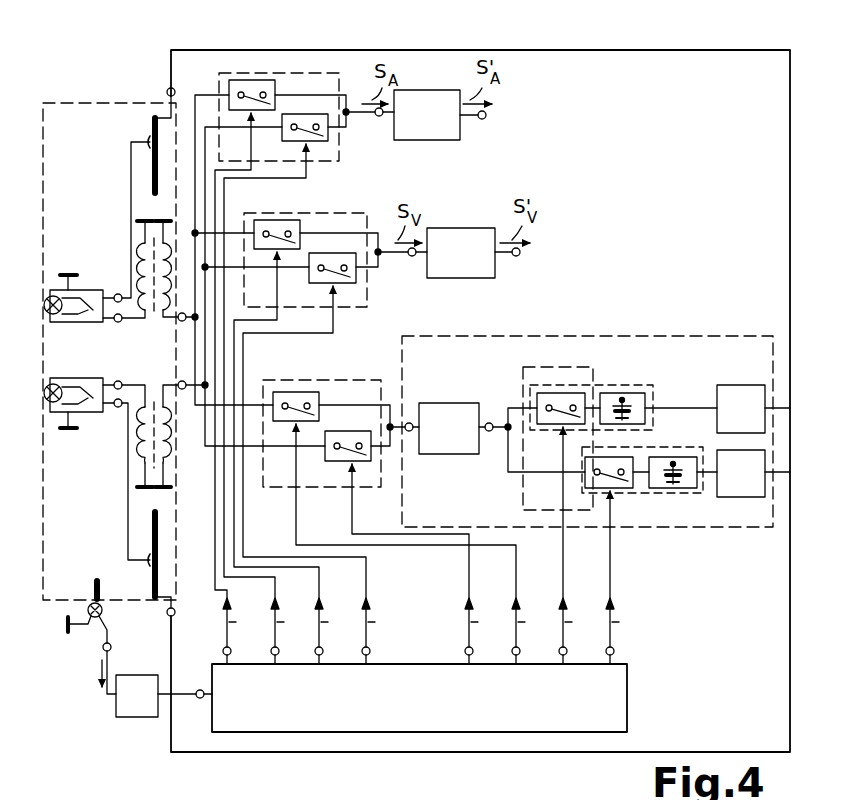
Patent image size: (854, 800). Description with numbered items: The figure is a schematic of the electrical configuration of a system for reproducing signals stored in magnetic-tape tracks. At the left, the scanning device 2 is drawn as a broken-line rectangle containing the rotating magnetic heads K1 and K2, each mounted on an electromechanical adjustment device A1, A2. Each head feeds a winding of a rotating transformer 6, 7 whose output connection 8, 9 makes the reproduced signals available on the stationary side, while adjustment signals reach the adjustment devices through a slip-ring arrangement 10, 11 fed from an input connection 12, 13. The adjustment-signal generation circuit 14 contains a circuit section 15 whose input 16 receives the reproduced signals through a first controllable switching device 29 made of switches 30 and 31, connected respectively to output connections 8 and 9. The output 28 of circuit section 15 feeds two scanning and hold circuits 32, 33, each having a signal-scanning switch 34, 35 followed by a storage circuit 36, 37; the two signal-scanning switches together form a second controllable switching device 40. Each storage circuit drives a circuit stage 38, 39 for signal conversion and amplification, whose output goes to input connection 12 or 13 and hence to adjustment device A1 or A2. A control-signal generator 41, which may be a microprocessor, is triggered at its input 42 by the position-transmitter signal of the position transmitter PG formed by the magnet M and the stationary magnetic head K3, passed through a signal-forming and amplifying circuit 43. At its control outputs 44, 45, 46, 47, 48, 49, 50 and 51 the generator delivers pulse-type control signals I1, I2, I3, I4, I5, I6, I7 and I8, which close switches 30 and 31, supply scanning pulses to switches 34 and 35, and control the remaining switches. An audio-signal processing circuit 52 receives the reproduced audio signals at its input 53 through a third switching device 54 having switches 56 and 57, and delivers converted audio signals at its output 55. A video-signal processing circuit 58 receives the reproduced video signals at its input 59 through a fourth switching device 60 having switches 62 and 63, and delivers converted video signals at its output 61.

The scanning device 2 is at (82, 100).
The rotating transformer 6 is at (151, 312).
The rotating transformer 7 is at (154, 393).
The output connection 8 is at (183, 312).
The output connection 9 is at (183, 390).
The slip-ring arrangement 10 is at (146, 142).
The slip-ring arrangement 11 is at (124, 558).
The input connection 12 is at (168, 89).
The input connection 13 is at (174, 616).
The adjustment-signal generation circuit 14 is at (652, 334).
The circuit section 15 is at (440, 408).
The input 16 is at (411, 432).
The output 28 is at (489, 432).
The first controllable switching device 29 is at (342, 378).
The switch 30 is at (284, 392).
The switch 31 is at (336, 448).
The scanning and hold circuit 32 is at (623, 400).
The scanning and hold circuit 33 is at (627, 490).
The signal-scanning switch 34 is at (548, 418).
The signal-scanning switch 35 is at (584, 478).
The storage circuit 36 is at (614, 396).
The storage circuit 37 is at (660, 488).
The circuit stage 38 is at (736, 396).
The circuit stage 39 is at (740, 494).
The second controllable switching device 40 is at (546, 366).
The control-signal generator 41 is at (627, 712).
The input 42 is at (200, 699).
The signal-forming and amplifying circuit 43 is at (130, 716).
The control output 44 is at (473, 653).
The control output 45 is at (520, 653).
The control output 46 is at (567, 653).
The control output 47 is at (614, 653).
The control output 48 is at (231, 653).
The control output 49 is at (279, 653).
The control output 50 is at (323, 653).
The control output 51 is at (370, 653).
The audio-signal processing circuit 52 is at (426, 138).
The input 53 is at (378, 117).
The third switching device 54 is at (298, 76).
The output terminal 55 is at (485, 118).
The switch 56 is at (253, 88).
The switch 57 is at (304, 120).
The video-signal processing circuit 58 is at (458, 278).
The input 59 is at (411, 257).
The fourth switching device 60 is at (326, 212).
The output 61 is at (518, 256).
The switch 62 is at (272, 226).
The switch 63 is at (324, 256).
The electromechanical adjustment device A1 is at (92, 294).
The electromechanical adjustment device A2 is at (90, 412).
The magnetic head K1 is at (52, 315).
The magnetic head K2 is at (60, 387).
The stationary magnetic head K3 is at (101, 612).
The magnet M is at (92, 590).
The pulse generator PG is at (99, 670).
The pulse-type control signal I1 is at (485, 623).
The pulse-type control signal I2 is at (532, 623).
The pulse-type control signal I3 is at (579, 623).
The pulse-type control signal I4 is at (626, 623).
The pulse-type control signal I5 is at (243, 623).
The control signal I6 is at (291, 623).
The pulse-type control signal I7 is at (335, 623).
The pulse-type control signal I8 is at (382, 623).